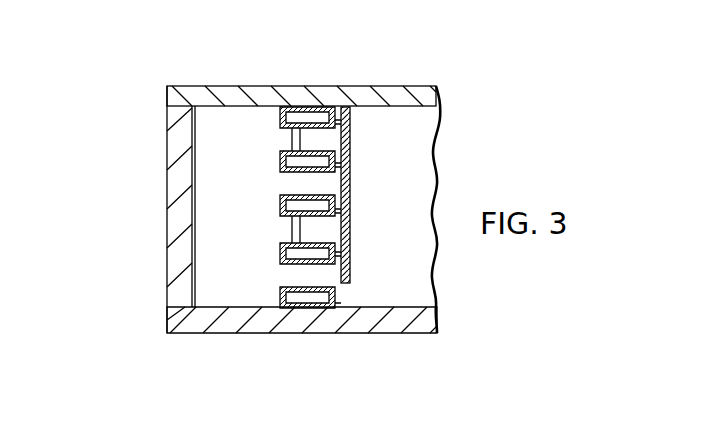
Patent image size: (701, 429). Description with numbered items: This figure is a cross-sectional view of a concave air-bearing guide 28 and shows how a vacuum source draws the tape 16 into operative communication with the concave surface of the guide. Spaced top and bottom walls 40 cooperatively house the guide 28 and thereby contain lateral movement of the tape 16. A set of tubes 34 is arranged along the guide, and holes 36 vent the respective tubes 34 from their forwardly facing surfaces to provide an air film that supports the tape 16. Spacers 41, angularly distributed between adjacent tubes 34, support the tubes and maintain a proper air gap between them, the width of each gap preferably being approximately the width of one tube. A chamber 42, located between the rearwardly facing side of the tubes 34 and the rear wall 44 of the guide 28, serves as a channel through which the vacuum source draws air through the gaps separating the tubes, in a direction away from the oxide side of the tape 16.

The guide 28 is at (210, 76).
The top and bottom walls 40 is at (343, 86).
The rear wall 44 is at (167, 163).
The tape 16 is at (350, 282).
The tubes 34 is at (280, 158).
The spacers 41 is at (292, 138).
The chamber 42 is at (231, 224).
The holes 36 is at (341, 114).